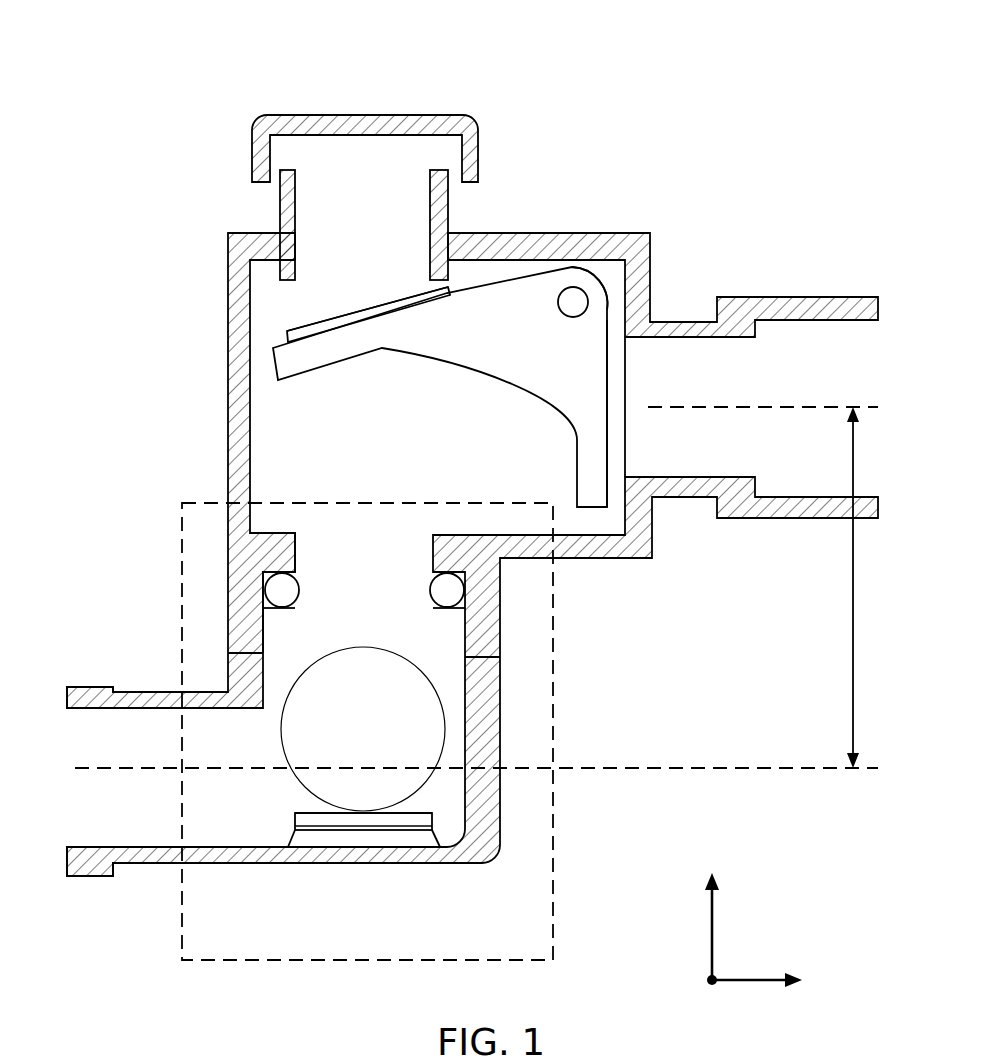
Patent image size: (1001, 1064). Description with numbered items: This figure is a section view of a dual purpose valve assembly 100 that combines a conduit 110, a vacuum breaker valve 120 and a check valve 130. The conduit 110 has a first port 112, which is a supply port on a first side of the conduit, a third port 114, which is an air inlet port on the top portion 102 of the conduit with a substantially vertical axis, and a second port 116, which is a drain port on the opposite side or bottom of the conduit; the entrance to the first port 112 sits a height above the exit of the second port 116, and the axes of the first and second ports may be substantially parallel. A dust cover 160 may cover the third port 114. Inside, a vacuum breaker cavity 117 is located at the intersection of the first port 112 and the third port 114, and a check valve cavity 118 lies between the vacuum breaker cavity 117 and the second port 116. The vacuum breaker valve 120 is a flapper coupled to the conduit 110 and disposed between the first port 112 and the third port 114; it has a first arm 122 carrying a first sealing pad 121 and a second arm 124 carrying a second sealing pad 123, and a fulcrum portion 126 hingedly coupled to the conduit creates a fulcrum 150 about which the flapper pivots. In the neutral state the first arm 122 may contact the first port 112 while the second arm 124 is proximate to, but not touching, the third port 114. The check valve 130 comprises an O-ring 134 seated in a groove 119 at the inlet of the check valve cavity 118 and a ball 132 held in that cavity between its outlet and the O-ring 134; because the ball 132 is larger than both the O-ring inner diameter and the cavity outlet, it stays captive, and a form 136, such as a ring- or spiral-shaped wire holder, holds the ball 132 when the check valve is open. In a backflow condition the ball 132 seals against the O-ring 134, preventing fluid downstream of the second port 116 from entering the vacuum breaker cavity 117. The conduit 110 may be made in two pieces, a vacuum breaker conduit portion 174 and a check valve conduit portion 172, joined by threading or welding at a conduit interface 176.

The dual purpose valve assembly 100 is at (232, 99).
The top portion 102 is at (492, 310).
The conduit 110 is at (235, 413).
The first port 112 is at (795, 303).
The third port 114 is at (290, 218).
The second port 116 is at (170, 700).
The vacuum breaker cavity 117 is at (358, 452).
The check valve cavity 118 is at (285, 648).
The groove 119 is at (450, 590).
The vacuum breaker valve 120 is at (515, 290).
The first sealing pad 121 is at (617, 407).
The first arm 122 is at (598, 375).
The second sealing pad 123 is at (373, 305).
The second arm 124 is at (428, 318).
The fulcrum portion 126 is at (590, 279).
The check valve 130 is at (525, 852).
The ball 132 is at (393, 782).
The O-ring 134 is at (453, 595).
The form 136 is at (343, 822).
The fulcrum 150 is at (577, 303).
The dust cover 160 is at (318, 125).
The check valve conduit portion 172 is at (160, 857).
The vacuum breaker conduit portion 174 is at (237, 333).
The conduit interface 176 is at (255, 653).